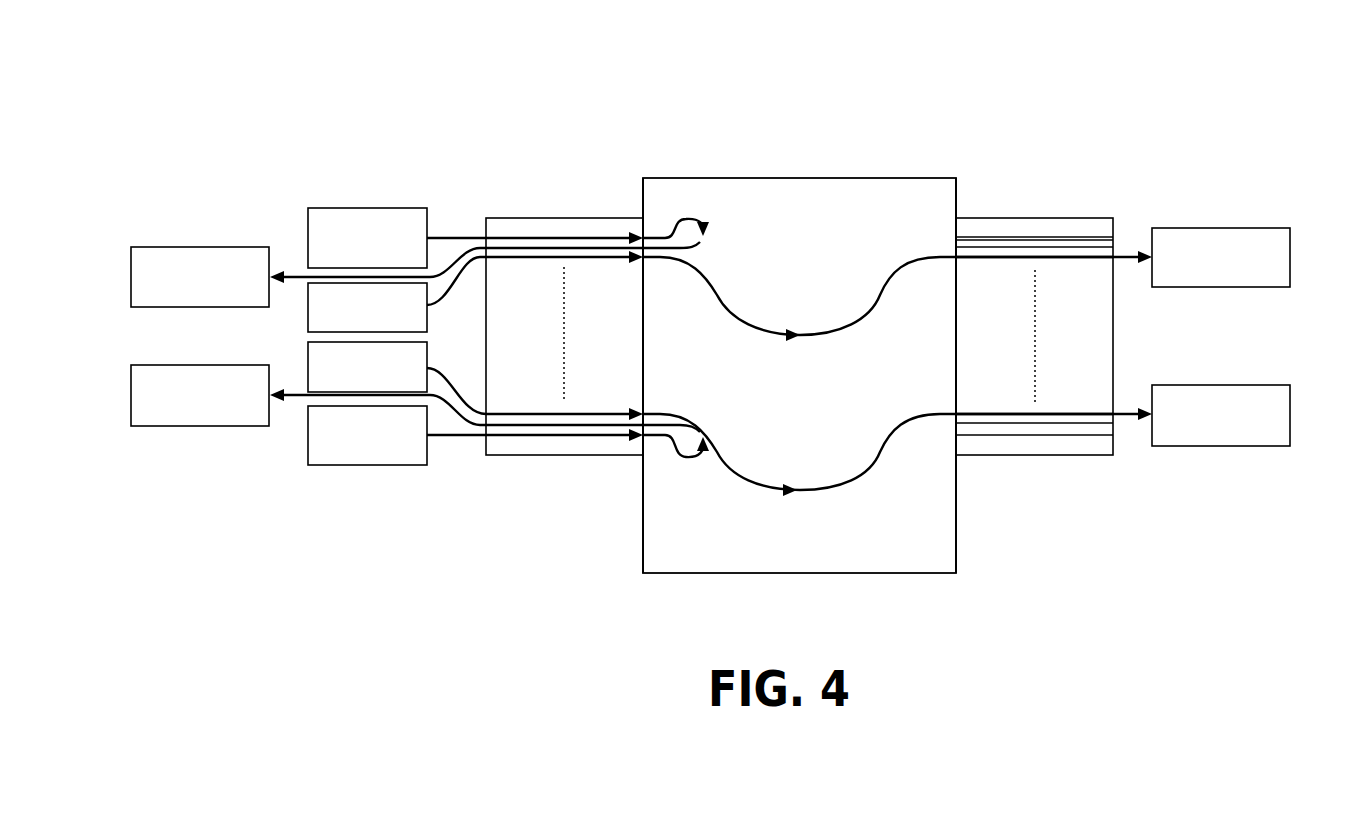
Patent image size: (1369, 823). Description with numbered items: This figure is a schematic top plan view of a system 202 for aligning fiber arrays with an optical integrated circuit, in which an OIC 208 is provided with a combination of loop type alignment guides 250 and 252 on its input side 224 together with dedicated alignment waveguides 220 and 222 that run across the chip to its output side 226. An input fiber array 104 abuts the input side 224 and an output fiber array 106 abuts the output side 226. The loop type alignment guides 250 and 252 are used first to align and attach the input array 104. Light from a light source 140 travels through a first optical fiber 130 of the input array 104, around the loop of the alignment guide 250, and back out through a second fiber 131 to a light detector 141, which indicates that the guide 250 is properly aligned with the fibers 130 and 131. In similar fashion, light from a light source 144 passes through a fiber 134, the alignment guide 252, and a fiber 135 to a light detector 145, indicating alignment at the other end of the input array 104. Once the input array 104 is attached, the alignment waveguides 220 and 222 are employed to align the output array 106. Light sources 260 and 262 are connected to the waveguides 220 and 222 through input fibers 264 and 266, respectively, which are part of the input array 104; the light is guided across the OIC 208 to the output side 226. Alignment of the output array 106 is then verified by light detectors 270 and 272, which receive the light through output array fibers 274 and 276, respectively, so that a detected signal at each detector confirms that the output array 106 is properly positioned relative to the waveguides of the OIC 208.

The system 202 is at (436, 51).
The input fiber array 104 is at (633, 217).
The output fiber array 106 is at (972, 217).
The optical integrated circuit 208 is at (956, 178).
The input side 224 is at (643, 535).
The output side 226 is at (957, 533).
The first optical fiber 130 is at (559, 236).
The second fiber 131 is at (557, 258).
The first optical fiber 134 is at (559, 437).
The second fiber 135 is at (559, 416).
The light source 140 is at (327, 208).
The light source 144 is at (328, 465).
The light source 260 is at (308, 300).
The light source 262 is at (308, 370).
The light detector 141 is at (170, 247).
The light detector 145 is at (170, 427).
The light detector 270 is at (1273, 228).
The light detector 272 is at (1273, 446).
The alignment waveguide 220 is at (847, 330).
The alignment waveguide 222 is at (785, 492).
The loop type alignment guide 250 is at (712, 206).
The loop type alignment guide 252 is at (672, 470).
The input fiber 264 is at (605, 258).
The input fiber 266 is at (603, 413).
The output array fiber 274 is at (1040, 258).
The output array fiber 276 is at (1040, 413).